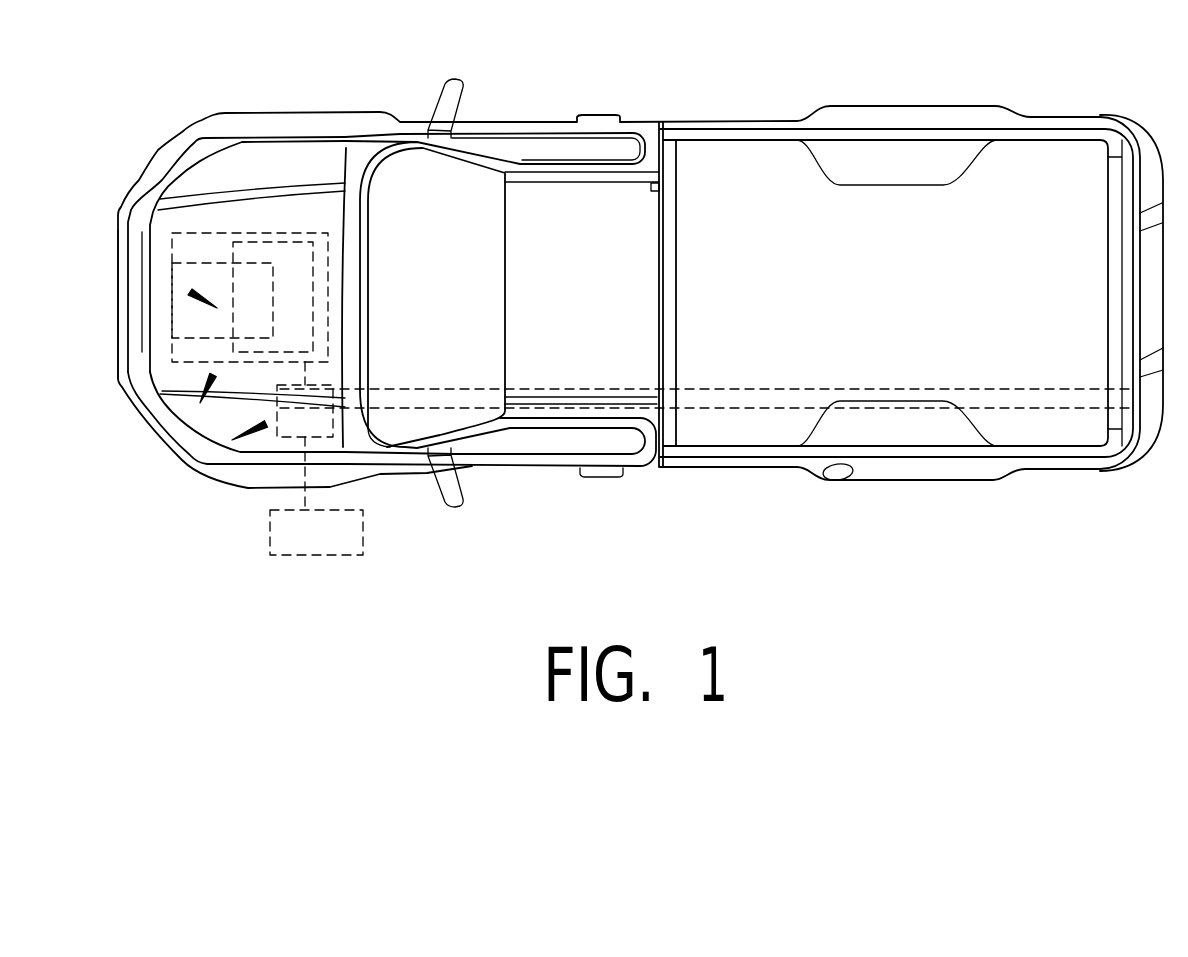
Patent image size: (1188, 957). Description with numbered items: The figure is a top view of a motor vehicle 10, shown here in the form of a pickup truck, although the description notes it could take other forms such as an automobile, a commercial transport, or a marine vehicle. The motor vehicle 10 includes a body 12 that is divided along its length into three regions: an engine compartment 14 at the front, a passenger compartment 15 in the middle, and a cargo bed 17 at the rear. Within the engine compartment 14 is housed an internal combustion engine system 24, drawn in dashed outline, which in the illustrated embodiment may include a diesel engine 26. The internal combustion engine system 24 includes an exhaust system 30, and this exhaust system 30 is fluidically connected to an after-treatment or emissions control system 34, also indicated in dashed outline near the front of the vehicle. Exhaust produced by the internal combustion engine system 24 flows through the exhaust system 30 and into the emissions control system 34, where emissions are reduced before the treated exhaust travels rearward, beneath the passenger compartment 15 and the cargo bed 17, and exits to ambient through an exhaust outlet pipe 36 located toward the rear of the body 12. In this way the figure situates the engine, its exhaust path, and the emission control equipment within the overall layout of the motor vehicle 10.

The motor vehicle 10 is at (938, 547).
The body 12 is at (727, 498).
The engine compartment 14 is at (273, 153).
The passenger compartment 15 is at (436, 185).
The cargo bed 17 is at (759, 159).
The internal combustion engine system 24 is at (172, 284).
The diesel engine 26 is at (165, 228).
The exhaust system 30 is at (162, 448).
The emissions control system 34 is at (222, 450).
The exhaust outlet pipe 36 is at (1045, 440).